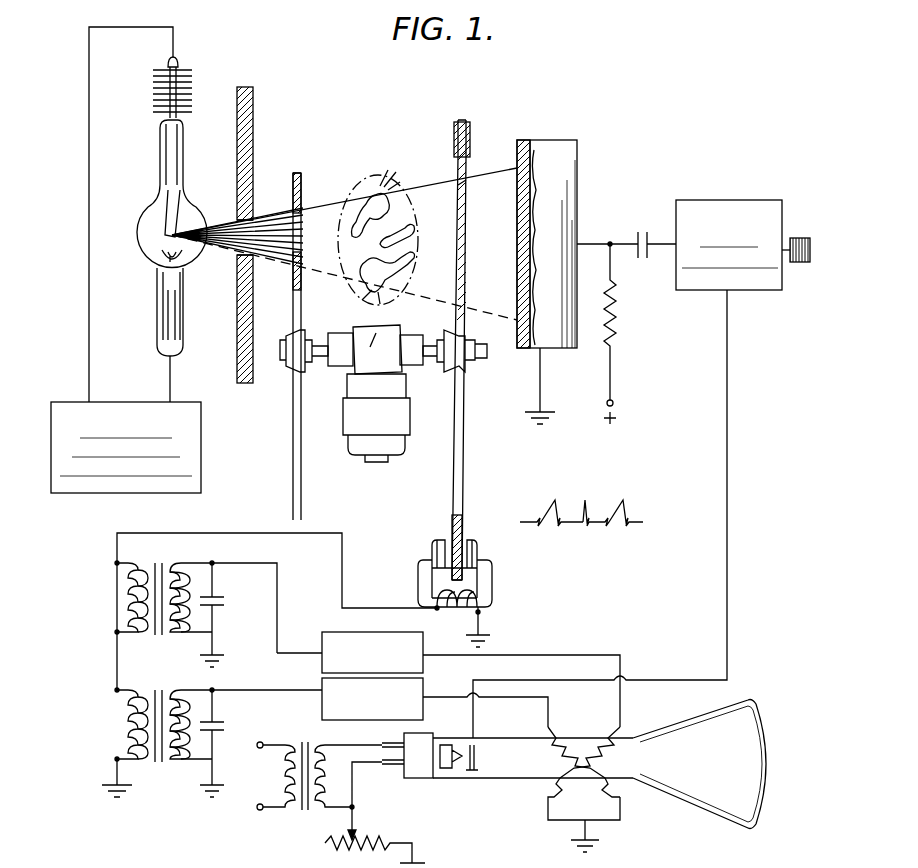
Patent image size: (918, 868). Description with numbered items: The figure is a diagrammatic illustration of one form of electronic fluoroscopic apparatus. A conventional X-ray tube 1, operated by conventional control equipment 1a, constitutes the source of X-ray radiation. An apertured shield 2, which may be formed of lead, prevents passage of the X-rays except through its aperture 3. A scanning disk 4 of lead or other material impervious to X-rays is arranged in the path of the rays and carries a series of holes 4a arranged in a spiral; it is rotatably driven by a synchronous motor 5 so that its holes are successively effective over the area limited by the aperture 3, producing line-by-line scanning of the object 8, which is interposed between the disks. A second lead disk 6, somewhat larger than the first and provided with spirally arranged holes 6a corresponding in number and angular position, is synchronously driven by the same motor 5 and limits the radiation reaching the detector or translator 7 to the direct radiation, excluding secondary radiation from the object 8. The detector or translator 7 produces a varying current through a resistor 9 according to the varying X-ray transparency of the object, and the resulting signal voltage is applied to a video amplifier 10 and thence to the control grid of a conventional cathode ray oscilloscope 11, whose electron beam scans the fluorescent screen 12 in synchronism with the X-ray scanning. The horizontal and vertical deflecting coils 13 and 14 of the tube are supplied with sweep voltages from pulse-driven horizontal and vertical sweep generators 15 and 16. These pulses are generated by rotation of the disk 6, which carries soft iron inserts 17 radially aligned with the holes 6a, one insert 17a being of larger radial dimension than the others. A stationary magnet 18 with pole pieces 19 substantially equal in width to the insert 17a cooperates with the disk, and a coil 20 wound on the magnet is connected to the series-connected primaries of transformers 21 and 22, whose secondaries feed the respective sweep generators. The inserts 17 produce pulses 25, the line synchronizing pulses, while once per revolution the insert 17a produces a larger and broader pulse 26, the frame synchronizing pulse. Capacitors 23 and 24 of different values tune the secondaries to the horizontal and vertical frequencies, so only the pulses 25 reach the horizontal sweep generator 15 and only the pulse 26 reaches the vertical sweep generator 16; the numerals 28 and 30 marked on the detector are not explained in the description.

The X-ray tube 1 is at (143, 223).
The control equipment 1a is at (201, 436).
The apertured shield 2 is at (254, 105).
The aperture 3 is at (245, 218).
The scanning disk 4 is at (301, 290).
The holes 4a is at (303, 190).
The synchronous motor 5 is at (380, 427).
The second lead disk 6 is at (466, 273).
The holes 6a is at (466, 187).
The detector or translator 7 is at (553, 140).
The object 8 is at (381, 178).
The resistor 9 is at (617, 322).
The video amplifier 10 is at (727, 200).
The cathode ray oscilloscope 11 is at (503, 770).
The fluorescent screen 12 is at (770, 762).
The horizontal deflecting coil 13 is at (615, 727).
The vertical deflecting coil 14 is at (548, 731).
The horizontal sweep generator 15 is at (337, 632).
The vertical sweep generator 16 is at (358, 722).
The soft iron inserts 17 is at (452, 556).
The insert 17a is at (455, 133).
The stationary magnet 18 is at (492, 585).
The pole pieces 19 is at (438, 540).
The coil 20 is at (452, 612).
The transformer 21 is at (172, 559).
The transformer 22 is at (176, 683).
The capacitor 23 is at (218, 606).
The capacitor 24 is at (219, 731).
The pulses 25 is at (581, 500).
The pulse 26 is at (589, 496).
The fluorescent layer 28 is at (528, 236).
The photoelectric layer 30 is at (517, 160).